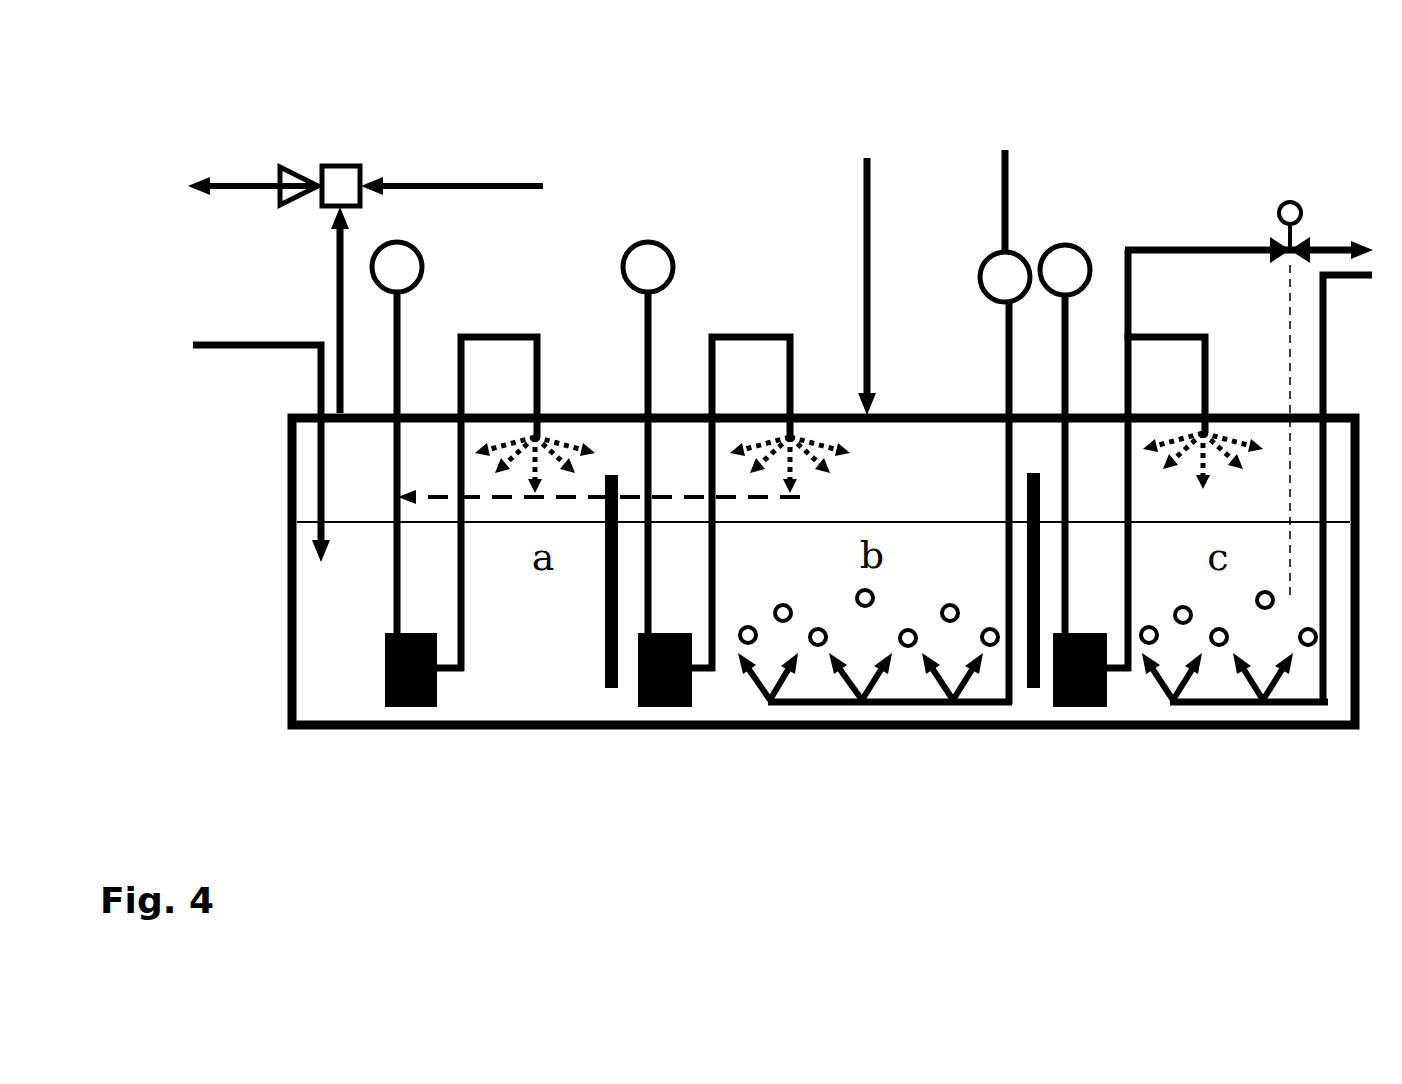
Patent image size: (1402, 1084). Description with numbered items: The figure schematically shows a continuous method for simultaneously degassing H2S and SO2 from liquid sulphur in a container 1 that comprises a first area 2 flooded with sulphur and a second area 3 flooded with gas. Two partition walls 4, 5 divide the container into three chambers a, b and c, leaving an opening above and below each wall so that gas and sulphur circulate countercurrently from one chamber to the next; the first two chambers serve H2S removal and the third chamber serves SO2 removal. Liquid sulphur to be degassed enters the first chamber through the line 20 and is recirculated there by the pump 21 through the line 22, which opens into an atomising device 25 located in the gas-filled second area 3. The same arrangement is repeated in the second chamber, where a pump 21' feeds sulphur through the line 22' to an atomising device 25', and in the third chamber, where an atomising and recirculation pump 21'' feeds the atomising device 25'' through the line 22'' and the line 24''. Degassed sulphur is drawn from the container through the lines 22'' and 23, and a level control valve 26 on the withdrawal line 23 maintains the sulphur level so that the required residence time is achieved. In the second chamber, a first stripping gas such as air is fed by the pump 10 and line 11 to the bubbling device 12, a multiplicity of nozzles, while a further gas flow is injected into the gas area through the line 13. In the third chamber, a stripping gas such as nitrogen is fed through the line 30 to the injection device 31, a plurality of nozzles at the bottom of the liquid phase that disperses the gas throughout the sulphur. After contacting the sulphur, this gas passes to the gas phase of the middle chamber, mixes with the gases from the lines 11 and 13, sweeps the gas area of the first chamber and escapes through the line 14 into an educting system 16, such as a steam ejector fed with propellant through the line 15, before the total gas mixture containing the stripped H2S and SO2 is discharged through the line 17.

The container 1 is at (527, 729).
The first area 2 is at (367, 596).
The second area 3 is at (945, 458).
The partition wall 4 is at (612, 688).
The partition wall 5 is at (1033, 688).
The pump 10 is at (1000, 275).
The line 11 is at (1007, 328).
The bubbling device 12 is at (862, 706).
The line 13 is at (865, 180).
The line 14 is at (338, 270).
The line 15 is at (477, 183).
The educting system 16 is at (341, 164).
The line 17 is at (243, 192).
The line 20 is at (207, 352).
The pump 21 is at (418, 525).
The pump 21' is at (669, 525).
The atomising and recirculation pump 21'' is at (1085, 525).
The line 22 is at (499, 452).
The line 22' is at (751, 454).
The line 22'' is at (1094, 262).
The withdrawal line 23 is at (1217, 248).
The line 24'' is at (1166, 432).
The atomising device 25 is at (543, 414).
The atomising device 25' is at (792, 417).
The atomising device 25'' is at (1209, 416).
The level control valve 26 is at (1290, 201).
The line 30 is at (1348, 280).
The injection device 31 is at (1232, 706).